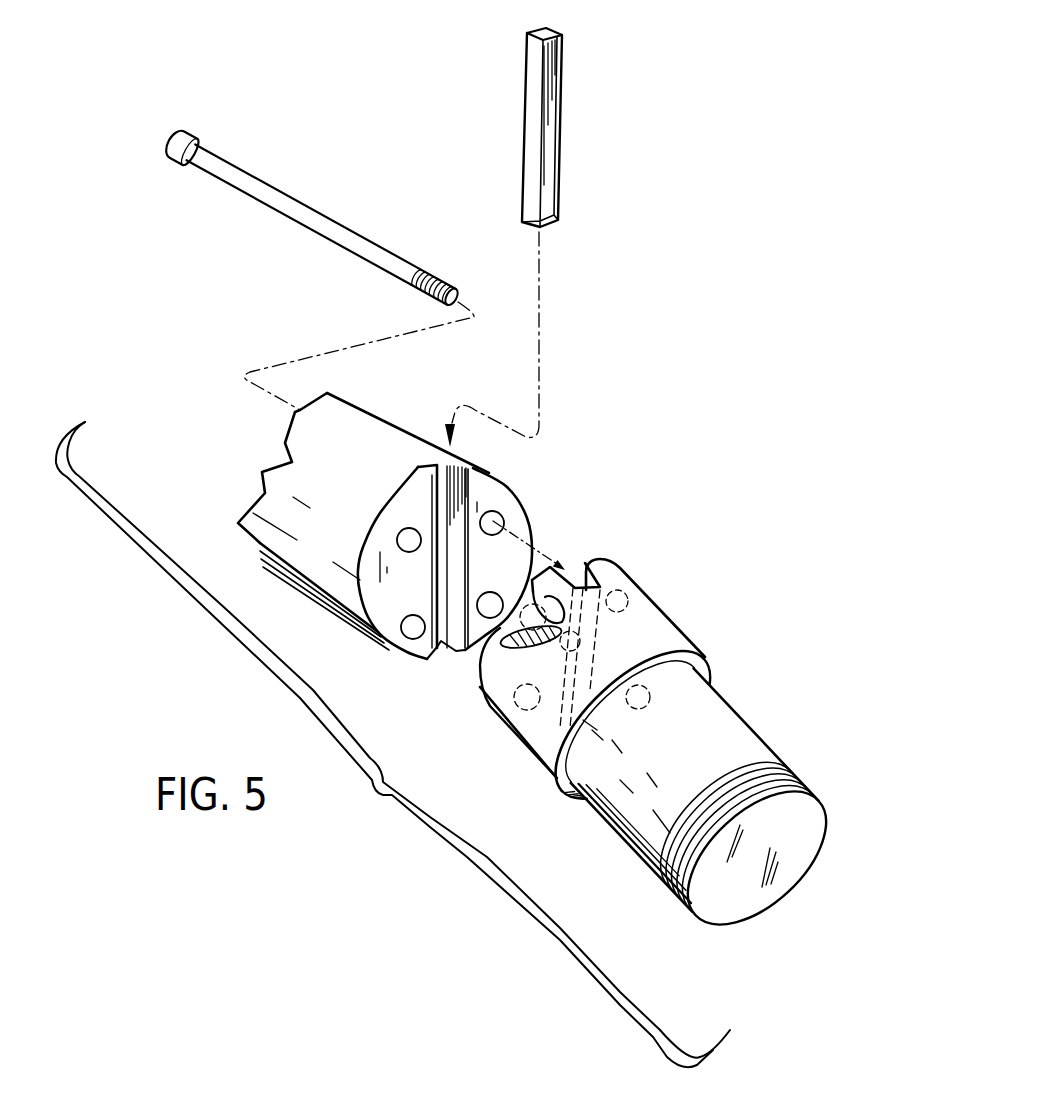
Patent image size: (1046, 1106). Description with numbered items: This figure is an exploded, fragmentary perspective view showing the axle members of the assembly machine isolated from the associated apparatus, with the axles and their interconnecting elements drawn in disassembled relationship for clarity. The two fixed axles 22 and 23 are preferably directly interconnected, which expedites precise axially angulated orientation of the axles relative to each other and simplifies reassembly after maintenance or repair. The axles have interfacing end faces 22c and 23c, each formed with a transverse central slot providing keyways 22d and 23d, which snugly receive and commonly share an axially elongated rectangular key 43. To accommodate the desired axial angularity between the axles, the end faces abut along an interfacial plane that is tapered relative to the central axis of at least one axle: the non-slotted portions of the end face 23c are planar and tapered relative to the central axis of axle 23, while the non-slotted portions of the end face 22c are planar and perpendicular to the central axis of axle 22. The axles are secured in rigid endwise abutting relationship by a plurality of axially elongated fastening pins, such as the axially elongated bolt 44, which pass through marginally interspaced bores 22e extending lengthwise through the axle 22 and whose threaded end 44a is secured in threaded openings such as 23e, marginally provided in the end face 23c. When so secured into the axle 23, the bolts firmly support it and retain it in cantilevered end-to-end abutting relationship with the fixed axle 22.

The fixed axle 22 is at (320, 611).
The end face 22c is at (513, 523).
The keyway 22d is at (447, 663).
The bores 22e is at (409, 540).
The fixed axle 23 is at (513, 764).
The end face 23c is at (480, 687).
The keyway 23d is at (579, 546).
The threaded openings 23e is at (509, 591).
The rectangular key 43 is at (563, 69).
The bolt 44 is at (219, 156).
The threaded end 44a is at (433, 280).